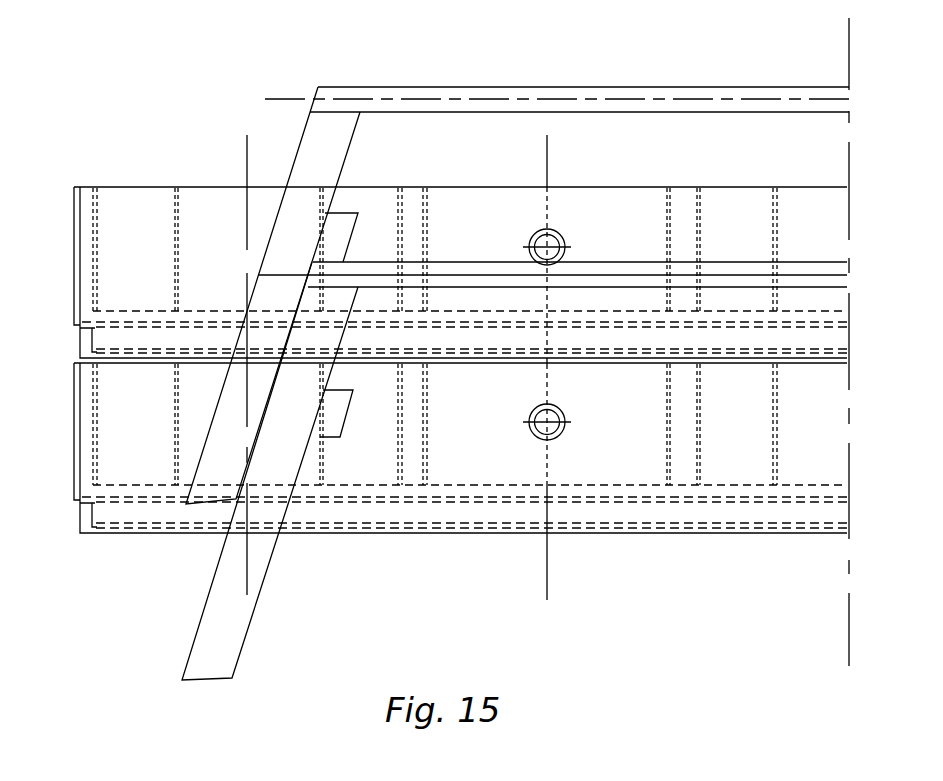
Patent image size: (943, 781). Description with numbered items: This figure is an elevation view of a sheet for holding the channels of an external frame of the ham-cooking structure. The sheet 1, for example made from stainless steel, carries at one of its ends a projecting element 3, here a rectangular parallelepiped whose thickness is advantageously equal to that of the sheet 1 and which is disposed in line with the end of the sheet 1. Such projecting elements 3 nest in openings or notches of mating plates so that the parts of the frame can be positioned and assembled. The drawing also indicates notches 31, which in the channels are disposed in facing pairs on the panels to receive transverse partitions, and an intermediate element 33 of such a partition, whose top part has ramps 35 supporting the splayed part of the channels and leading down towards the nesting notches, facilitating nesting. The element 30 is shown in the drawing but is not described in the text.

The sheet 1 is at (479, 462).
The projecting element 3 is at (777, 217).
The frame 30 is at (850, 72).
The notches 31 is at (73, 272).
The intermediate element 33 is at (228, 625).
The ramps 35 is at (463, 92).